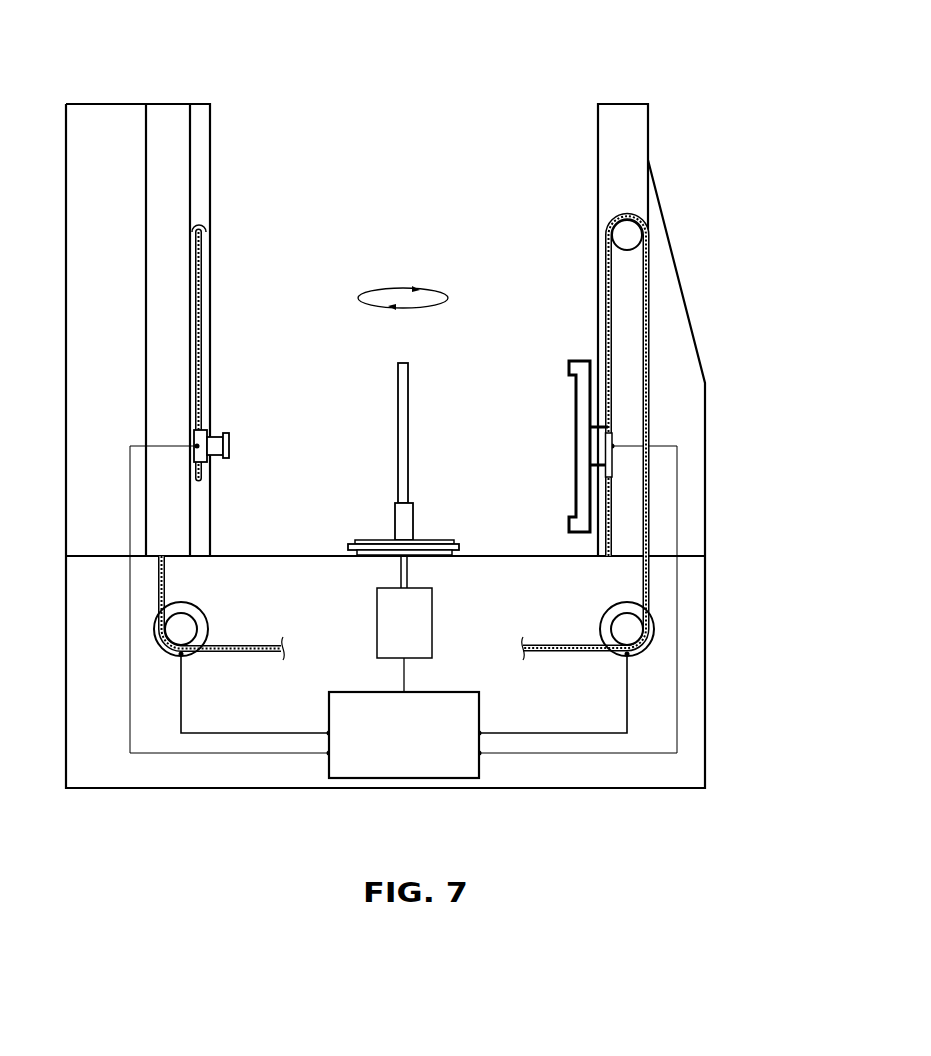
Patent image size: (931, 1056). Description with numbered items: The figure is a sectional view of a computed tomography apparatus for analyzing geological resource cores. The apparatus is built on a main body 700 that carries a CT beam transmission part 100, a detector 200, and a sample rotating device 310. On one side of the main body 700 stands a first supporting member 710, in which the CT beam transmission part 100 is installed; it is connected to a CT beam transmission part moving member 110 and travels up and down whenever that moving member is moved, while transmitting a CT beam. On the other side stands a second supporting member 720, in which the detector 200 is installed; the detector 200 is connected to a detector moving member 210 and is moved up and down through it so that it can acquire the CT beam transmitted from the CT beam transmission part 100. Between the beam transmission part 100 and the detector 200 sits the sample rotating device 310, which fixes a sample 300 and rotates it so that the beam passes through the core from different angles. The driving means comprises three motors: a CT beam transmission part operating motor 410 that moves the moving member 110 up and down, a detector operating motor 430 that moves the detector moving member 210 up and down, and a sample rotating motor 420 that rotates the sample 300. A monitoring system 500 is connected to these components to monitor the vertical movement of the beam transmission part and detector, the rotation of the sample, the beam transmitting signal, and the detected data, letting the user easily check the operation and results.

The CT beam transmission part 100 is at (215, 440).
The CT beam transmission part moving member 110 is at (203, 226).
The detector 200 is at (576, 385).
The detector moving member 210 is at (640, 228).
The sample 300 is at (408, 363).
The sample rotating device 310 is at (402, 525).
The CT beam transmission part operating motor 410 is at (182, 608).
The sample rotating motor 420 is at (427, 638).
The detector operating motor 430 is at (652, 624).
The monitoring system 500 is at (474, 720).
The main body 700 is at (706, 705).
The first supporting member 710 is at (172, 103).
The second supporting member 720 is at (622, 103).